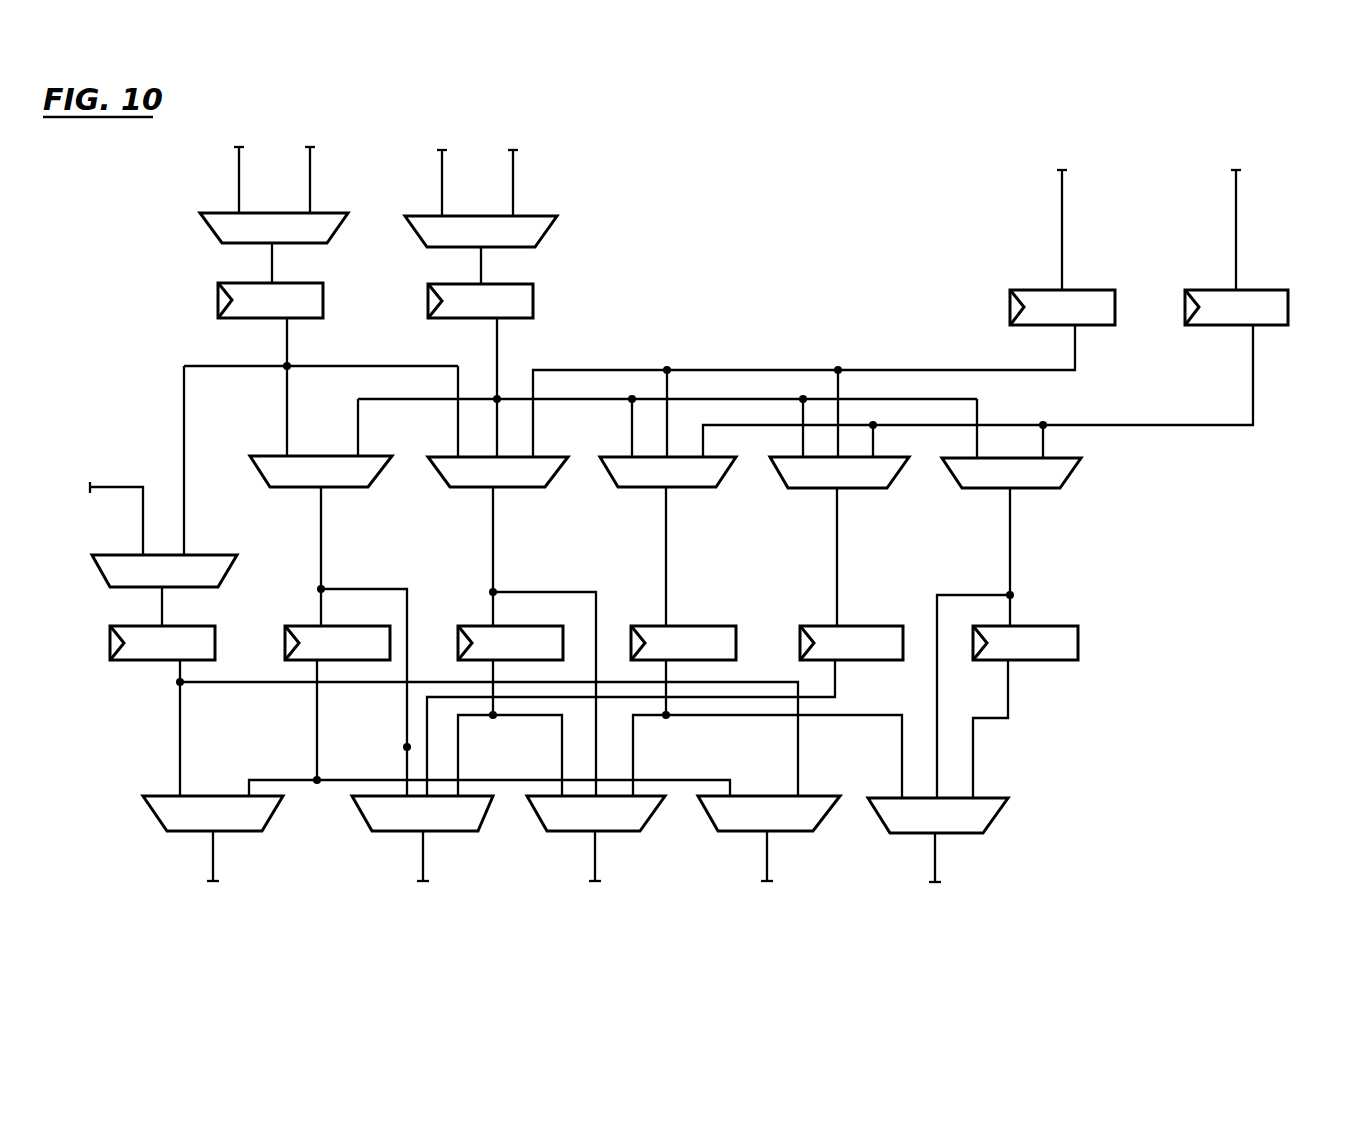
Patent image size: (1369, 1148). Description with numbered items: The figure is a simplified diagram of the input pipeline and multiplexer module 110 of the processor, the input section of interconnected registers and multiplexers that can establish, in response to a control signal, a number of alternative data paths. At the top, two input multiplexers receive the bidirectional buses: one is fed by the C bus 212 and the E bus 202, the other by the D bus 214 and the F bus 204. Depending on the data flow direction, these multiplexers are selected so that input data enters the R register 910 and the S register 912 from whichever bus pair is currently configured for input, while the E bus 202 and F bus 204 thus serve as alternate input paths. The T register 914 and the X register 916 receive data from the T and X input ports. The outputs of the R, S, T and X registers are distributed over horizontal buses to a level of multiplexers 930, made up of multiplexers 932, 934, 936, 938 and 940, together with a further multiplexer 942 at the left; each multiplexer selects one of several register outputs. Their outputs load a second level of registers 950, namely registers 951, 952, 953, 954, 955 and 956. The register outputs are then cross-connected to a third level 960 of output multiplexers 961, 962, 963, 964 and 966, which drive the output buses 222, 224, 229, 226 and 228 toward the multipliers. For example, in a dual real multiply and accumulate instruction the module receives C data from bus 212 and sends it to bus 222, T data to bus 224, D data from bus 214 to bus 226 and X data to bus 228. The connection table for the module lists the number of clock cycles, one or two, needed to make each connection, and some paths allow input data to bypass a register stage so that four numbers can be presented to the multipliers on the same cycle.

The input pipeline mux 110 is at (1187, 813).
The E bus 202 is at (239, 171).
The C bus 212 is at (310, 170).
The D bus 214 is at (442, 173).
The F bus 204 is at (513, 170).
The R register 910 is at (323, 297).
The S register 912 is at (533, 299).
The T register 914 is at (1115, 305).
The X register 916 is at (1288, 308).
The multiplexer level 930 is at (1098, 468).
The multiplexer 932 is at (328, 626).
The multiplexer 934 is at (512, 626).
The multiplexer 936 is at (668, 541).
The multiplexer 938 is at (839, 541).
The multiplexer 940 is at (1011, 628).
The multiplexer 942 is at (213, 557).
The register level 950 is at (1106, 646).
The register 951 is at (183, 628).
The register 952 is at (337, 628).
The register 953 is at (512, 628).
The register 954 is at (690, 628).
The register 955 is at (853, 628).
The register 956 is at (1028, 628).
The register level 960 is at (1025, 815).
The output multiplexer 961 is at (225, 827).
The output multiplexer 962 is at (428, 831).
The output multiplexer 963 is at (600, 831).
The output multiplexer 964 is at (769, 831).
The output multiplexer 966 is at (938, 832).
The output bus 222 is at (213, 868).
The output bus 224 is at (423, 868).
The output bus 229 is at (595, 870).
The output bus 226 is at (767, 870).
The output bus 228 is at (935, 875).